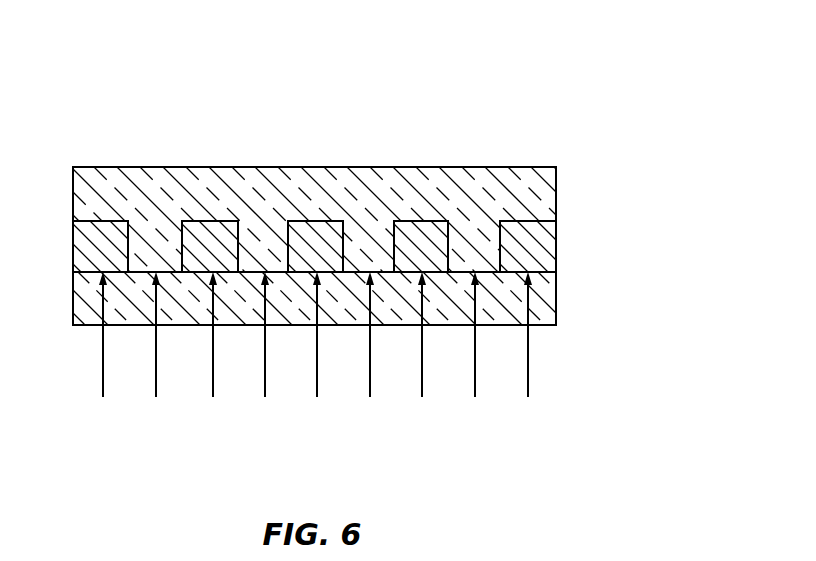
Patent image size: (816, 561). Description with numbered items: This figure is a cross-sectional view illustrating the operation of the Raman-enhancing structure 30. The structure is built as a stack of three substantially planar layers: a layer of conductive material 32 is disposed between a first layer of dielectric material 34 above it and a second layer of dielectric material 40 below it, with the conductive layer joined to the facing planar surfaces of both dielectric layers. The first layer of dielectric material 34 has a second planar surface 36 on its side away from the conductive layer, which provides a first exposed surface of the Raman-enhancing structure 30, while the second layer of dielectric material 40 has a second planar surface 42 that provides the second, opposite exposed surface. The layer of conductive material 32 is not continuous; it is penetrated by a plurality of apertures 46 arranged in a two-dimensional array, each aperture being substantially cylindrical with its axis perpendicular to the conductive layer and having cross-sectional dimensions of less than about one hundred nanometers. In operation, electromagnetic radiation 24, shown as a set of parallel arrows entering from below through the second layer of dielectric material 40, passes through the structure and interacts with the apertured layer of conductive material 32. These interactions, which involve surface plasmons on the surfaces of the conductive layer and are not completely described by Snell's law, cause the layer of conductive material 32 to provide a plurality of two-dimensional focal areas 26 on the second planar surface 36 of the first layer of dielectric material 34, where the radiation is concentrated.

The Raman-enhancing structure 30 is at (596, 89).
The two-dimensional focal areas 26 is at (170, 163).
The second planar surface 36 is at (530, 167).
The first layer of dielectric material 34 is at (523, 181).
The apertures 46 is at (476, 243).
The layer of conductive material 32 is at (548, 236).
The second layer of dielectric material 40 is at (548, 293).
The second planar surface 42 is at (540, 328).
The electromagnetic radiation 24 is at (92, 410).